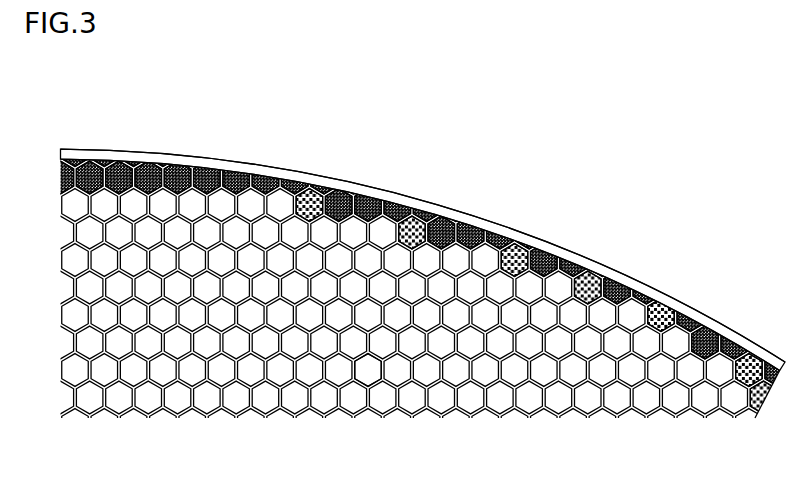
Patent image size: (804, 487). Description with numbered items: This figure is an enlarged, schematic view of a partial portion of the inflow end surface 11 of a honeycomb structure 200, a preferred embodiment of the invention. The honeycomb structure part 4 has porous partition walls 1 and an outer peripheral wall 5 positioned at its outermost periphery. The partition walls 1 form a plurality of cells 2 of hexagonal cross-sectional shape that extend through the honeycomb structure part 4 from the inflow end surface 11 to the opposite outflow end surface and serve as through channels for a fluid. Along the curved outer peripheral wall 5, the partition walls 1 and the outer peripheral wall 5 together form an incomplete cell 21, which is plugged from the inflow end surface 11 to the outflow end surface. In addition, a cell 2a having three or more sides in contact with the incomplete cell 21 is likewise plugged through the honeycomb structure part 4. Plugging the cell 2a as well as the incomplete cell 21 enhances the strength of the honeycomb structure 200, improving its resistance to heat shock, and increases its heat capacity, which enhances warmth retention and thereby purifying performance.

The honeycomb structure 200 is at (628, 112).
The partition walls 1 is at (518, 400).
The cells 2 is at (370, 375).
The cell having three or more sides in contact with the incomplete cell 2a is at (312, 197).
The incomplete cell 21 is at (668, 322).
The honeycomb structure part 4 is at (524, 229).
The outer peripheral wall 5 is at (270, 168).
The inflow end surface 11 is at (603, 262).